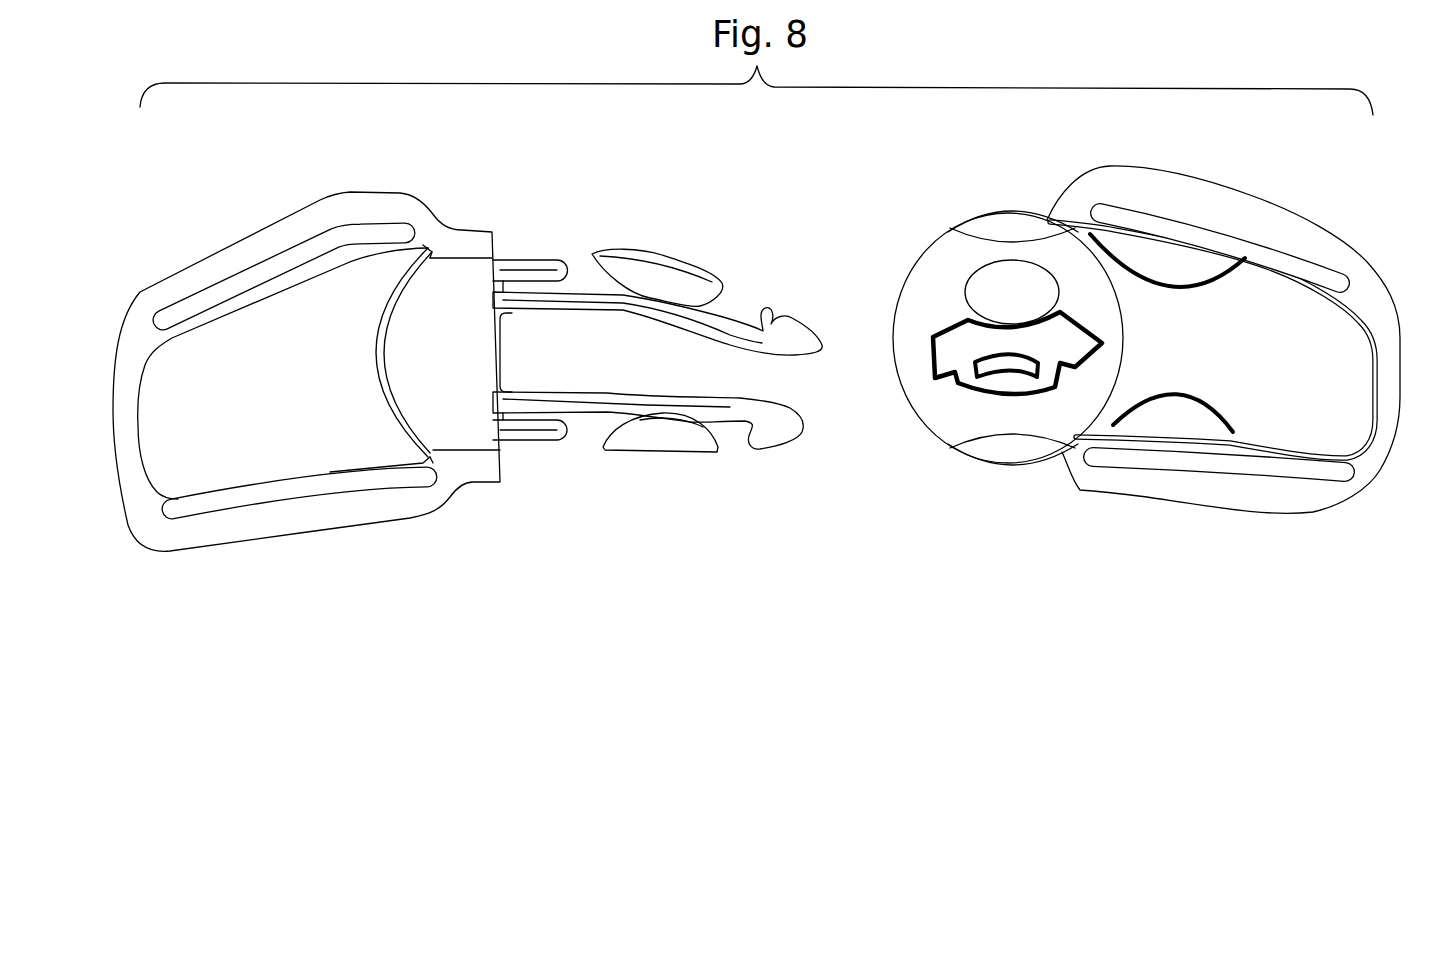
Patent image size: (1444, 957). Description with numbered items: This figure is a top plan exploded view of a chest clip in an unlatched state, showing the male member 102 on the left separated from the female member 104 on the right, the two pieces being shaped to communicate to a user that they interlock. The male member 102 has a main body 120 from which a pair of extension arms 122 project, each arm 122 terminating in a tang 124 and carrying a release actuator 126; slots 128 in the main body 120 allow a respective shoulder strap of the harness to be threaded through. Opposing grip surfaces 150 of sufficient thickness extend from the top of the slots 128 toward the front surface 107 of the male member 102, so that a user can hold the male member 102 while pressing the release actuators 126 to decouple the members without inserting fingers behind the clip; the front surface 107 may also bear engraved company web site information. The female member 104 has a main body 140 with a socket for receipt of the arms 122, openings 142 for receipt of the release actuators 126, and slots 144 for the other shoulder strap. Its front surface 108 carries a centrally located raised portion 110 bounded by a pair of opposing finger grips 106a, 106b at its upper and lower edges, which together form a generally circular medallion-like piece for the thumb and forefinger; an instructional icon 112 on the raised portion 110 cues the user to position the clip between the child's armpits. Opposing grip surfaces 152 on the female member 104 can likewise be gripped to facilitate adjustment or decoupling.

The male member 102 is at (427, 170).
The female member 104 is at (1205, 155).
The finger grip 106a is at (998, 225).
The finger grip 106b is at (1003, 450).
The front surface of the male member 107 is at (318, 360).
The front surface of the female member 108 is at (947, 301).
The raised portion 110 is at (945, 250).
The instructional icon 112 is at (952, 353).
The main body 120 is at (143, 522).
The extension arms 122 is at (725, 328).
The tang 124 is at (788, 327).
The release actuator 126 is at (665, 272).
The slots 128 is at (237, 287).
The main body 140 is at (1384, 270).
The openings 142 is at (1182, 268).
The slots 144 is at (1260, 247).
The grip surfaces 150 is at (306, 268).
The grip surfaces 152 is at (1298, 280).